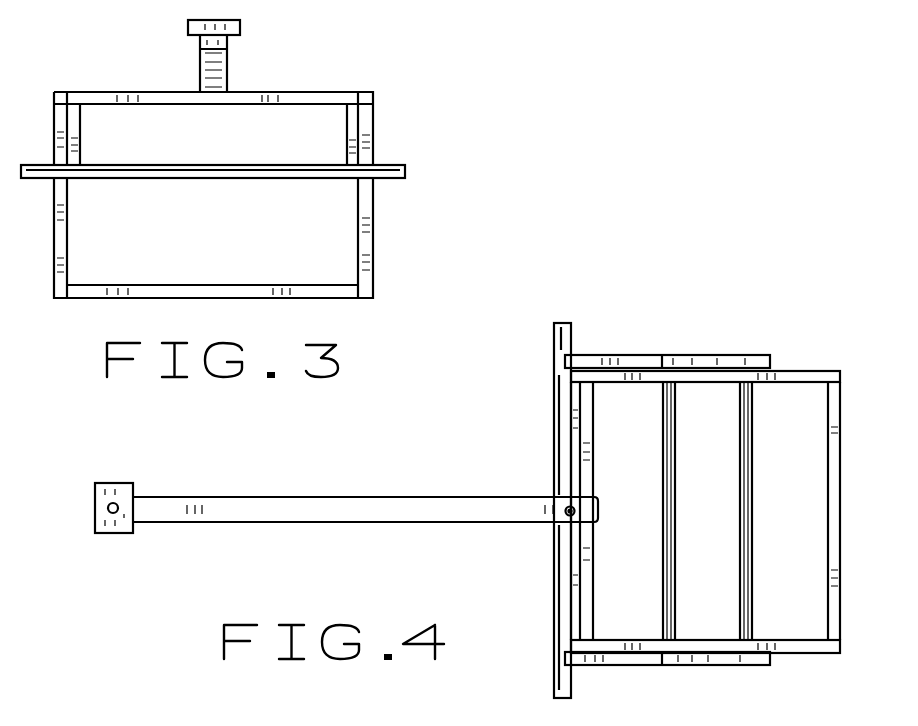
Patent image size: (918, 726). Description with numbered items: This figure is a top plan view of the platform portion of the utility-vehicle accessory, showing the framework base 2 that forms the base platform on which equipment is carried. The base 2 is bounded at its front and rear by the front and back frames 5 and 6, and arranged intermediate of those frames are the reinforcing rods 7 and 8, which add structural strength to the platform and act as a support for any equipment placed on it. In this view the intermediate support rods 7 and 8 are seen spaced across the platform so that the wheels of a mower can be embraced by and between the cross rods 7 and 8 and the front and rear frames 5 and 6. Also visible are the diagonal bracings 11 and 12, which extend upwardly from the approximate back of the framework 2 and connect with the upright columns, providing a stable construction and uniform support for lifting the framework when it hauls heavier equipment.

The framework base 2 is at (815, 352).
The front frame 5 is at (595, 467).
The back frame 6 is at (842, 497).
The reinforcing rod 7 is at (692, 500).
The reinforcing rod 8 is at (753, 492).
The bracing 11 is at (748, 663).
The bracing 12 is at (725, 355).